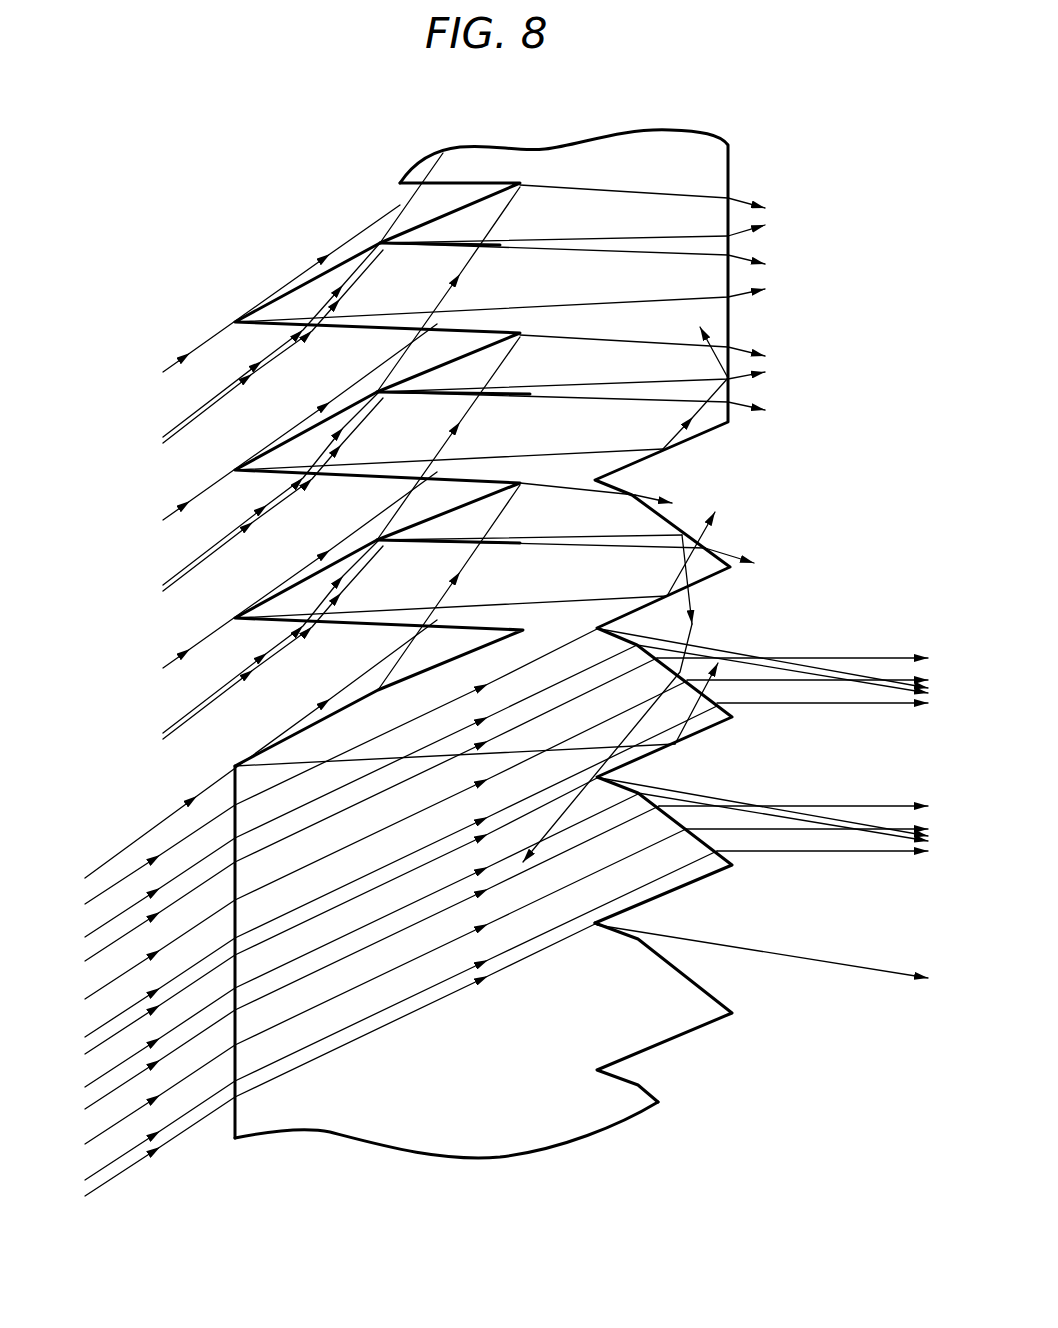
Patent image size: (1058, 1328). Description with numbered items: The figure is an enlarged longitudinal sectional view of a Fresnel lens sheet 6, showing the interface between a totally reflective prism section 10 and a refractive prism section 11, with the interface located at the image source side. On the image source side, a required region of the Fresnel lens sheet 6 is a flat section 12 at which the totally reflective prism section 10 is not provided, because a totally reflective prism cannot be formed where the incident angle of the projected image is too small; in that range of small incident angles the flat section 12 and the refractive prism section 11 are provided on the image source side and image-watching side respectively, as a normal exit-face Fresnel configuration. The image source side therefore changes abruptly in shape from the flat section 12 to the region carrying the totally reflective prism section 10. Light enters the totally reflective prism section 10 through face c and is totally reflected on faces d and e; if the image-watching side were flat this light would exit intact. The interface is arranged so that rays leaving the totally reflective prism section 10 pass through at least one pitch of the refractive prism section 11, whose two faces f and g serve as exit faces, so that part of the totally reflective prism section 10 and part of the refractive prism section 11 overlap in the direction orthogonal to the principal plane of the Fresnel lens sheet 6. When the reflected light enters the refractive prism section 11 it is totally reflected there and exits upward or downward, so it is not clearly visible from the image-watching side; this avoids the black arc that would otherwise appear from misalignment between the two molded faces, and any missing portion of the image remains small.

The Fresnel lens sheet 6 is at (508, 1150).
The totally reflective prism section 10 is at (400, 232).
The refractive prism section 11 is at (703, 990).
The flat section 12 is at (234, 1125).
The entrance face c is at (353, 478).
The totally reflecting face d is at (405, 381).
The totally reflecting face e is at (295, 442).
The exit face f is at (613, 484).
The exit face g is at (687, 553).